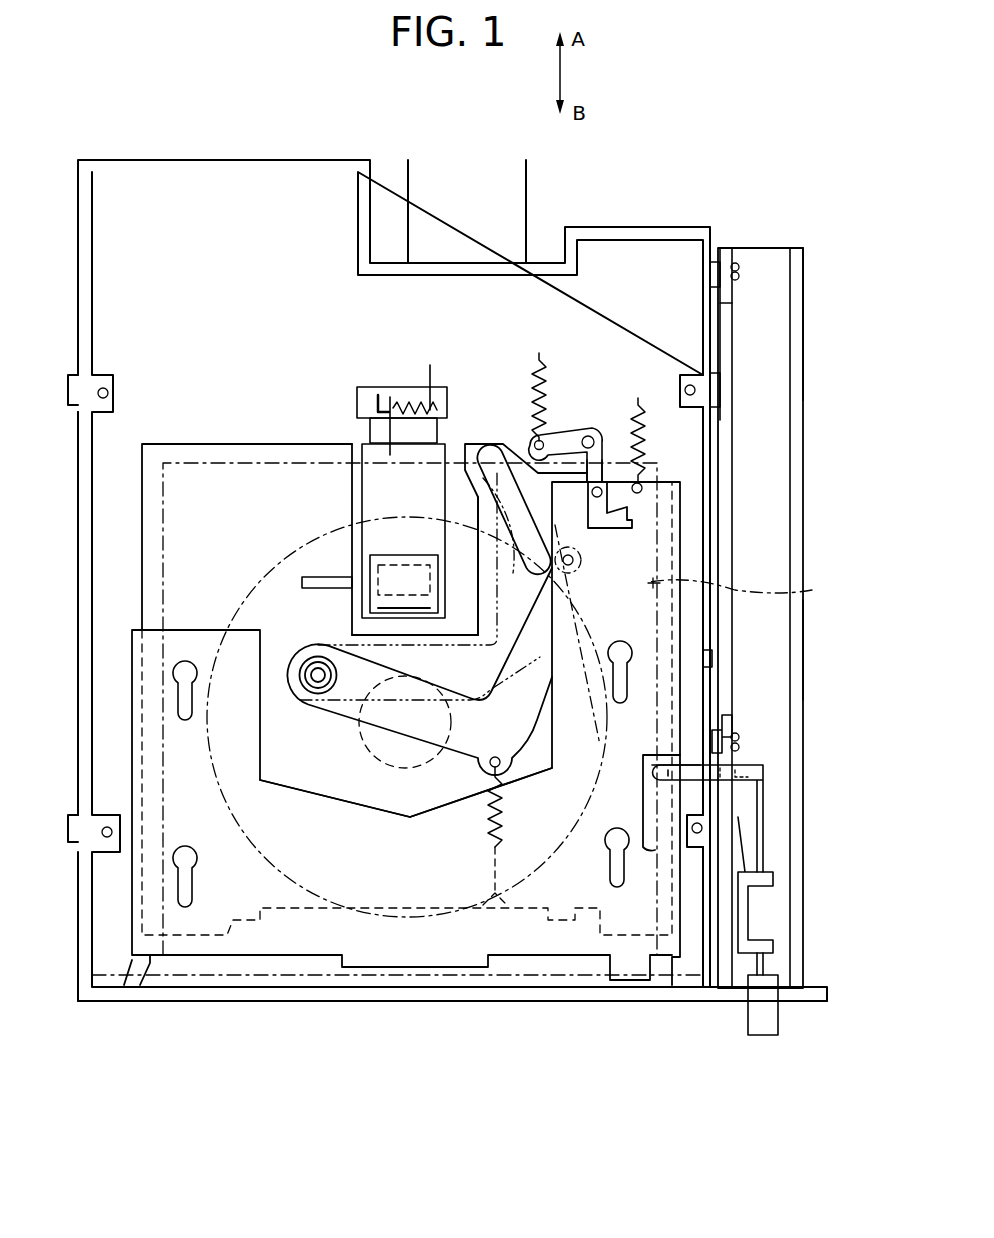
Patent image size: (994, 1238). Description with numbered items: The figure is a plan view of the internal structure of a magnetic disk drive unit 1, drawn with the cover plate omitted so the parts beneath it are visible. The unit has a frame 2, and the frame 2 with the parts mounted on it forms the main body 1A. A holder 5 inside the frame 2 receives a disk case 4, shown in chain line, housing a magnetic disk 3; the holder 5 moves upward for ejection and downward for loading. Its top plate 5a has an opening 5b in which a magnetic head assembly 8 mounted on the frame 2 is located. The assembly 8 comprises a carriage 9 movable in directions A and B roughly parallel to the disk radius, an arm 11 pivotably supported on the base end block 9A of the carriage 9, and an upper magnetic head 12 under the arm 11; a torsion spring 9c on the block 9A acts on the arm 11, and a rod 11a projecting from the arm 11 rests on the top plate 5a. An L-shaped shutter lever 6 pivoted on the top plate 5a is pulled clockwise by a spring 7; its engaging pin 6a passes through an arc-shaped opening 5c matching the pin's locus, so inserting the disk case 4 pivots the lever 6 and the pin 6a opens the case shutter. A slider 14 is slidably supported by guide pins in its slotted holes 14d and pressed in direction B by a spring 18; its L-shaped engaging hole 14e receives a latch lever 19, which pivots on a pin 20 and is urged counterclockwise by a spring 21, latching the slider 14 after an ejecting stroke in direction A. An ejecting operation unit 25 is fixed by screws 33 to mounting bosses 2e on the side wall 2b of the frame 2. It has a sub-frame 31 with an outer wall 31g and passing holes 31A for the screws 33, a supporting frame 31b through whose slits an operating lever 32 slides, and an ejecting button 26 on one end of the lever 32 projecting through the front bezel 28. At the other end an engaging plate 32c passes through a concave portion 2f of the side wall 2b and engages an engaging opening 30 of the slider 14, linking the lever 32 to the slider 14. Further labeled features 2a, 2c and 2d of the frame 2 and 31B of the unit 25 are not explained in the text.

The magnetic disk drive unit 1 is at (660, 35).
The main body 1A is at (75, 592).
The frame 2 is at (708, 437).
The housing side wall 2a is at (82, 487).
The side wall 2b is at (712, 547).
The mounting tabs with holes 2c is at (100, 393).
The housing projection 2d is at (715, 333).
The mounting bosses 2e is at (712, 262).
The concave portion 2f is at (707, 677).
The magnetic disk 3 is at (578, 815).
The disk case 4 is at (812, 590).
The holder 5 is at (204, 442).
The top plate 5a is at (372, 775).
The opening 5b is at (370, 635).
The arc-shaped opening 5c is at (507, 510).
The shutter lever 6 is at (338, 715).
The engaging pin 6a is at (578, 562).
The spring 7 is at (498, 822).
The magnetic head assembly 8 is at (318, 441).
The carriage 9 is at (437, 433).
The base end block 9A is at (436, 395).
The torsion spring 9c is at (390, 453).
The arm 11 is at (385, 500).
The rod 11a is at (317, 572).
The upper magnetic head 12 is at (400, 553).
The slider 14 is at (397, 957).
The slotted holes 14d is at (186, 722).
The engaging hole 14e is at (628, 520).
The spring 18 is at (645, 430).
The latch lever 19 is at (603, 475).
The pin 20 is at (573, 432).
The spring 21 is at (540, 408).
The ejecting operation unit 25 is at (822, 651).
The ejecting button 26 is at (765, 1035).
The front bezel 28 is at (500, 1000).
The engaging opening 30 is at (655, 785).
The sub-frame 31 is at (805, 768).
The passing holes 31A is at (720, 320).
The rail plate 31B is at (768, 263).
The outer wall 31g is at (806, 272).
The supporting frame 31b is at (737, 940).
The operating lever 32 is at (770, 915).
The engaging plate 32c is at (692, 763).
The screws 33 is at (740, 272).